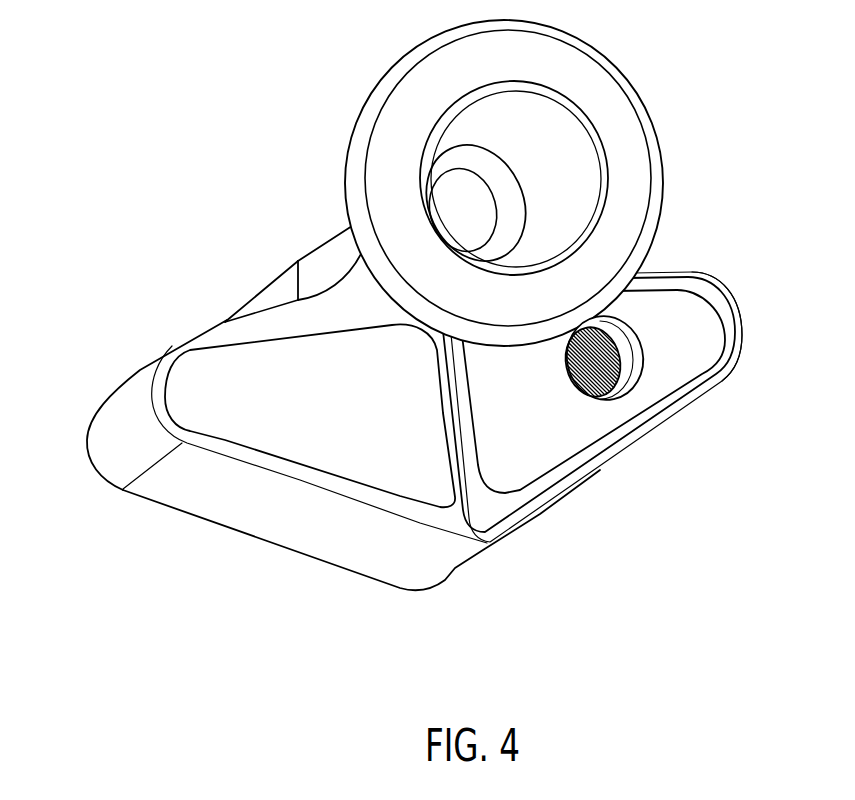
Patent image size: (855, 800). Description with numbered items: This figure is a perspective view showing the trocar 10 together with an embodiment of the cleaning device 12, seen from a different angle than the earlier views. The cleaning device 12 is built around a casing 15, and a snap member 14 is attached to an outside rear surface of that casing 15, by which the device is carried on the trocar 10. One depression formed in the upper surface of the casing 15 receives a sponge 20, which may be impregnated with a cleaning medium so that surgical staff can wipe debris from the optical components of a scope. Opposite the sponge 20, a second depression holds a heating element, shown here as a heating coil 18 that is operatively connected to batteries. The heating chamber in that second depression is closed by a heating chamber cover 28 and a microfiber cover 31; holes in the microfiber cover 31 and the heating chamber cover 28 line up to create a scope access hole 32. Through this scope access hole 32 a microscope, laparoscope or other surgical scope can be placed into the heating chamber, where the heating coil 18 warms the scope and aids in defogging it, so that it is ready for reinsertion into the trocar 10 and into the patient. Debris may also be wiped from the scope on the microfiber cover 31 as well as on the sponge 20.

The trocar 10 is at (642, 162).
The cleaning device 12 is at (74, 434).
The snap member 14 is at (327, 258).
The casing 15 is at (435, 587).
The heating coil 18 is at (597, 397).
The sponge 20 is at (300, 415).
The heating chamber cover 28 is at (533, 500).
The microfiber cover 31 is at (722, 327).
The scope access hole 32 is at (617, 375).